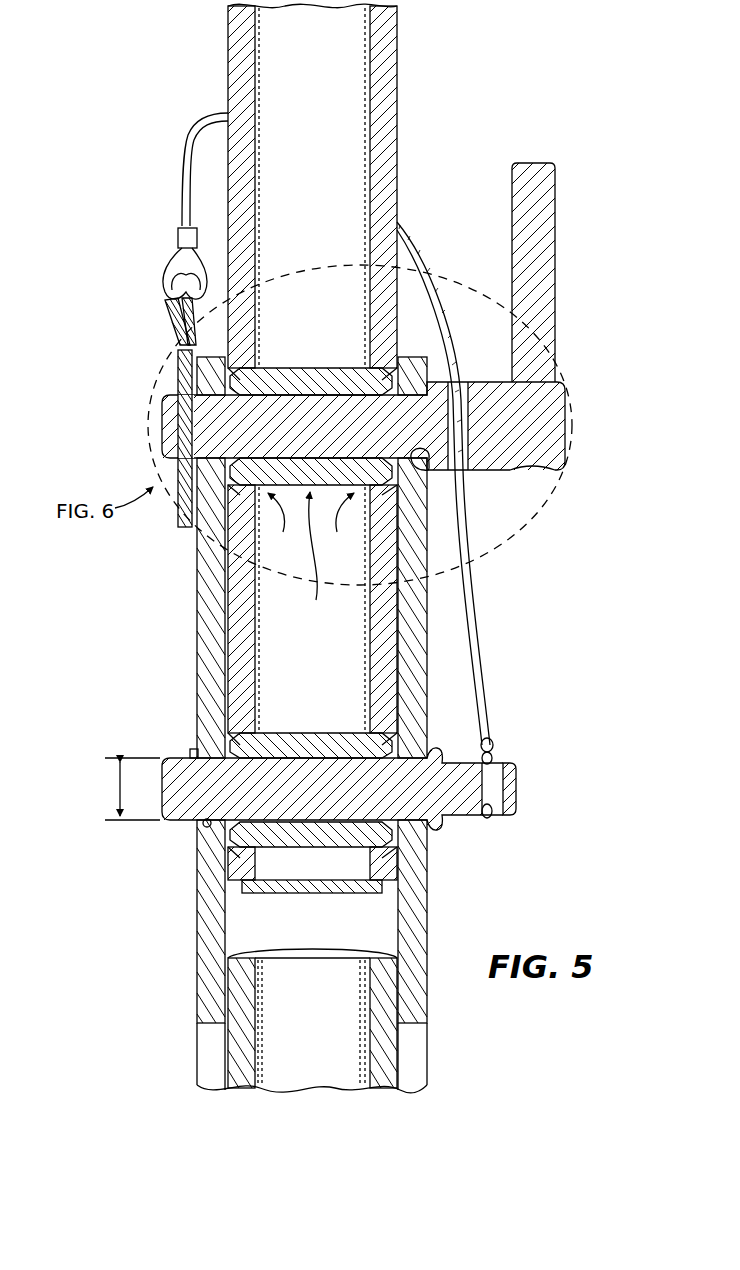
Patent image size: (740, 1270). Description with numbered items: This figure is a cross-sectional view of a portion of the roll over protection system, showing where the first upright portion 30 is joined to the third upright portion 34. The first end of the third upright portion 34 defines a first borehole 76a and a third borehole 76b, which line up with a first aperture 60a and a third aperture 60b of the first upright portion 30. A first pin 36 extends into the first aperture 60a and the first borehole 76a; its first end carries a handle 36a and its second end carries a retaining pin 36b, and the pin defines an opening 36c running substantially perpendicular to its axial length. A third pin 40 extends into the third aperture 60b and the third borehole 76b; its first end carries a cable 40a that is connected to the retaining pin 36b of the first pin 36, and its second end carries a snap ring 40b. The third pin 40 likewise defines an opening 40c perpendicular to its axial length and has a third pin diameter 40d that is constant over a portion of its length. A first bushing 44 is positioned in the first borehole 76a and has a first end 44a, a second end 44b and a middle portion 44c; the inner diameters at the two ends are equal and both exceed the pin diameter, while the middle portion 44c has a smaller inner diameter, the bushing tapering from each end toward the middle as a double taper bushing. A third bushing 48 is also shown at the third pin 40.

The first upright portion 30 is at (445, 1052).
The third upright portion 34 is at (400, 84).
The first pin 36 is at (570, 421).
The handle 36a is at (552, 216).
The retaining pin 36b is at (162, 343).
The opening 36c is at (177, 465).
The first bushing 44 is at (303, 380).
The first end 44a is at (342, 529).
The second end 44b is at (284, 529).
The middle portion 44c is at (330, 559).
The first borehole 76a is at (368, 372).
The third borehole 76b is at (268, 741).
The third bushing 48 is at (326, 741).
The first aperture 60a is at (430, 466).
The third aperture 60b is at (204, 826).
The third pin 40 is at (453, 803).
The cable 40a is at (481, 658).
The snap ring 40b is at (193, 749).
The opening 40c is at (492, 813).
The third pin diameter 40d is at (111, 789).